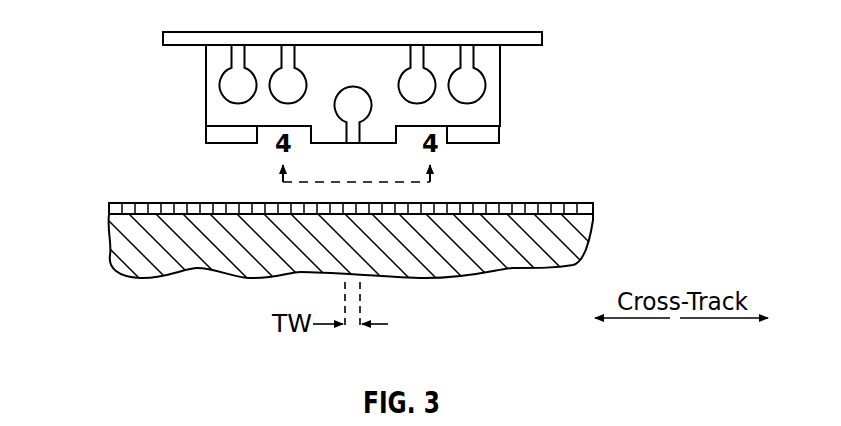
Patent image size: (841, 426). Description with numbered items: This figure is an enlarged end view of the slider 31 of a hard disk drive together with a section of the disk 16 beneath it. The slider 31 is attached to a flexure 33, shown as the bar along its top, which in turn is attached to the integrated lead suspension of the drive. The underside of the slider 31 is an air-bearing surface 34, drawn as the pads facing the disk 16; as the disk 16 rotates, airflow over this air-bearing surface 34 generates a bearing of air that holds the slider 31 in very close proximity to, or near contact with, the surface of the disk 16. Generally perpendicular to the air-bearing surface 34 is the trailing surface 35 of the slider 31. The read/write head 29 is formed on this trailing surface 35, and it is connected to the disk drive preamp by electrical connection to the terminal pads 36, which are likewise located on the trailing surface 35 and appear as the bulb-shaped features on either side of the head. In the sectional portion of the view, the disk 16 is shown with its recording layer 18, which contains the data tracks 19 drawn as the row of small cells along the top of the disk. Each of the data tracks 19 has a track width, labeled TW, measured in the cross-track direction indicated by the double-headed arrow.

The disk 16 is at (590, 223).
The recording layer 18 is at (108, 209).
The data tracks 19 is at (537, 204).
The read/write head 29 is at (353, 87).
The slider 31 is at (500, 121).
The flexure 33 is at (507, 35).
The air-bearing surface 34 is at (225, 146).
The trailing surface 35 is at (220, 113).
The terminal pads 36 is at (270, 85).